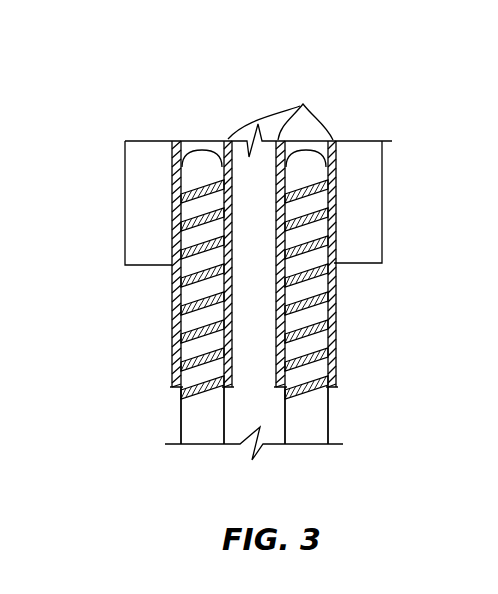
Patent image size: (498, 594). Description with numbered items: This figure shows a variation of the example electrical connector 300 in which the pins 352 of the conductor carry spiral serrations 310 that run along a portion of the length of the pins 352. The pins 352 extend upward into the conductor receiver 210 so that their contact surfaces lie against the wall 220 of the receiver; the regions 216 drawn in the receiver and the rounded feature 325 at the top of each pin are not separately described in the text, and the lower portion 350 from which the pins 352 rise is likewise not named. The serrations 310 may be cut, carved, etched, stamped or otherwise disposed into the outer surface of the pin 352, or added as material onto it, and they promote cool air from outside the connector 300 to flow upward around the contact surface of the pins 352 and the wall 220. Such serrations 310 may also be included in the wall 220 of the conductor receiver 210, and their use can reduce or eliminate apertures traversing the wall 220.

The electrical connector 300 is at (140, 61).
The conductor receiver 210 is at (348, 124).
The channels / openings 216 is at (164, 215).
The wall 220 is at (177, 141).
The dome-shaped tube end / cap 325 is at (203, 150).
The spiral serrations 310 is at (178, 313).
The pins 352 is at (220, 439).
The lower header / base plate 350 is at (309, 449).